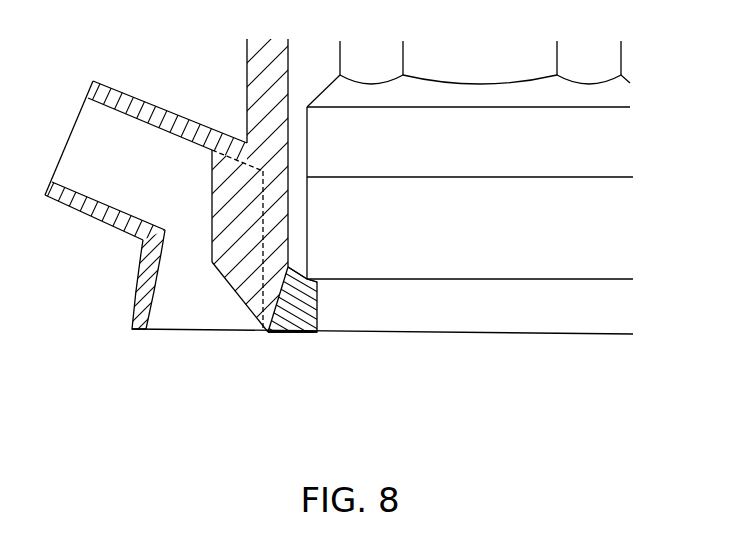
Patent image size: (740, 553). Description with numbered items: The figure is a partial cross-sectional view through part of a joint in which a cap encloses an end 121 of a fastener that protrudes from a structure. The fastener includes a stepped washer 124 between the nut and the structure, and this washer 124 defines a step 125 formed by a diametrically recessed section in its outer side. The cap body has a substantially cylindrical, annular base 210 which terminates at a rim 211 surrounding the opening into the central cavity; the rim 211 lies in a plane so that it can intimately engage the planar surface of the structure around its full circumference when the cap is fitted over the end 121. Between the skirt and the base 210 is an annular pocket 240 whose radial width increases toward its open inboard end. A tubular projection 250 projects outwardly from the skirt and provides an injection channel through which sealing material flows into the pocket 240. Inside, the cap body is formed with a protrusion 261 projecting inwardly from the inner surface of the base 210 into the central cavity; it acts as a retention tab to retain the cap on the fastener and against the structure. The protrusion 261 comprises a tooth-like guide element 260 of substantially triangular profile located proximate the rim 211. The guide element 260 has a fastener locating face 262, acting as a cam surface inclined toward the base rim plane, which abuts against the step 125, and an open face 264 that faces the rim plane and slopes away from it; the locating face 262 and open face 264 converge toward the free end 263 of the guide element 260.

The end of the fastener 121 is at (522, 92).
The washer 124 is at (550, 317).
The step 125 is at (463, 285).
The base 210 is at (248, 77).
The rim 211 is at (283, 335).
The annular pocket 240 is at (158, 308).
The tubular projection 250 is at (112, 78).
The guide element 260 is at (282, 291).
The protrusion 261 is at (306, 376).
The fastener locating face 262 is at (297, 268).
The free end 263 is at (320, 288).
The open face 264 is at (303, 323).